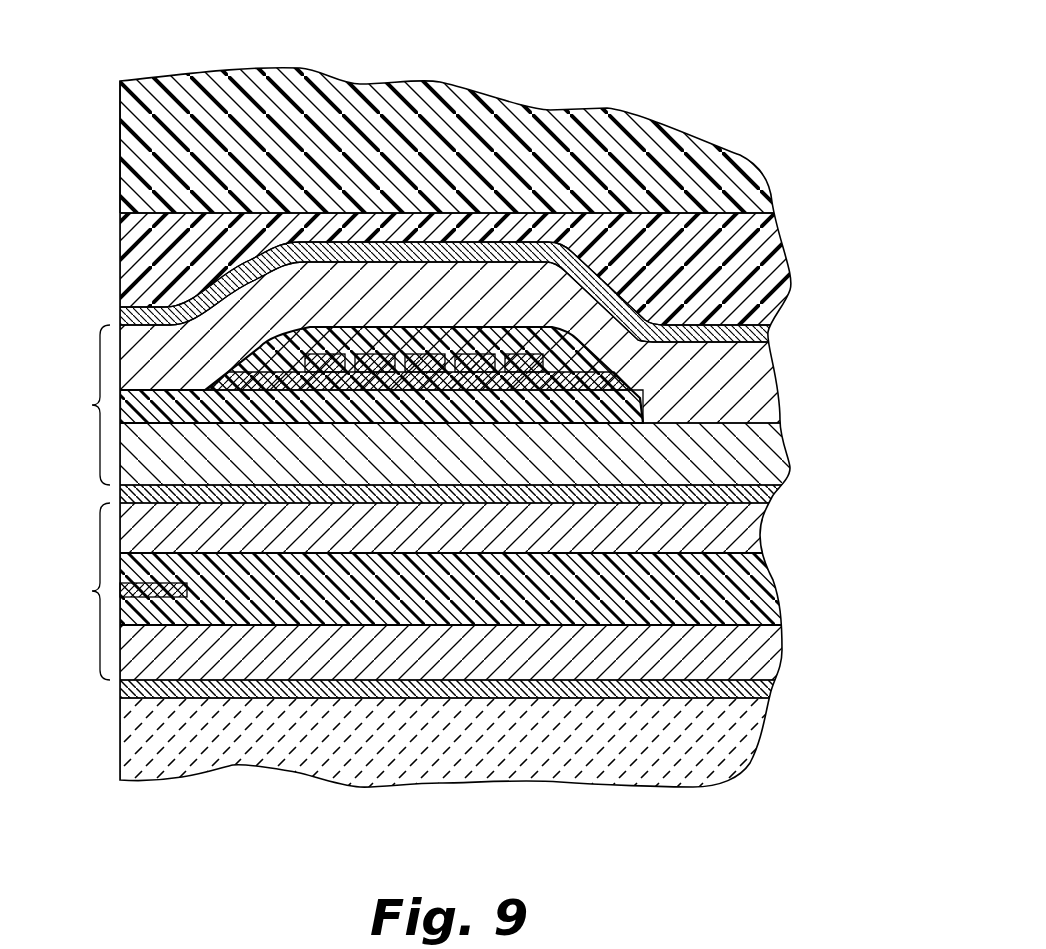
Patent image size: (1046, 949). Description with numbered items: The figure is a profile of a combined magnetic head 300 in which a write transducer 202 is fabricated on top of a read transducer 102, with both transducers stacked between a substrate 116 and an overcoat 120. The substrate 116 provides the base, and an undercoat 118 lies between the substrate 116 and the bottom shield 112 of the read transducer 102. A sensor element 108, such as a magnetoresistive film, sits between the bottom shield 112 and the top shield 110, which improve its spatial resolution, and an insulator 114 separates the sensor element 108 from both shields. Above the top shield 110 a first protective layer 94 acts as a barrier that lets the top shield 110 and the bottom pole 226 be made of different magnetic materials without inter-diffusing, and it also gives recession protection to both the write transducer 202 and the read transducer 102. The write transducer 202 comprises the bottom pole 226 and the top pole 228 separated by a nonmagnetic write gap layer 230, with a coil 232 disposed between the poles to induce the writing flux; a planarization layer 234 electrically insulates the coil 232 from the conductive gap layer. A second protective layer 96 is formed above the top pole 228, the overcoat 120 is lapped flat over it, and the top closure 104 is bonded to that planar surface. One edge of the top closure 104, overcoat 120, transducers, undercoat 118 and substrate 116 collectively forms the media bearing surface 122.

The top closure 104 is at (747, 200).
The overcoat 120 is at (770, 265).
The second protective layer 96 is at (770, 330).
The top pole 228 is at (763, 390).
The bottom pole 226 is at (762, 453).
The write gap layer 230 is at (575, 405).
The coil 232 is at (332, 362).
The planarization layer 234 is at (435, 362).
The first protective layer 94 is at (773, 490).
The top shield 110 is at (760, 525).
The insulator 114 is at (760, 587).
The bottom shield 112 is at (763, 650).
The undercoat 118 is at (763, 692).
The substrate 116 is at (730, 763).
The sensor element 108 is at (178, 597).
The media bearing surface 122 is at (119, 102).
The combined magnetic head 300 is at (560, 78).
The write transducer 202 is at (77, 405).
The read transducer 102 is at (77, 591).